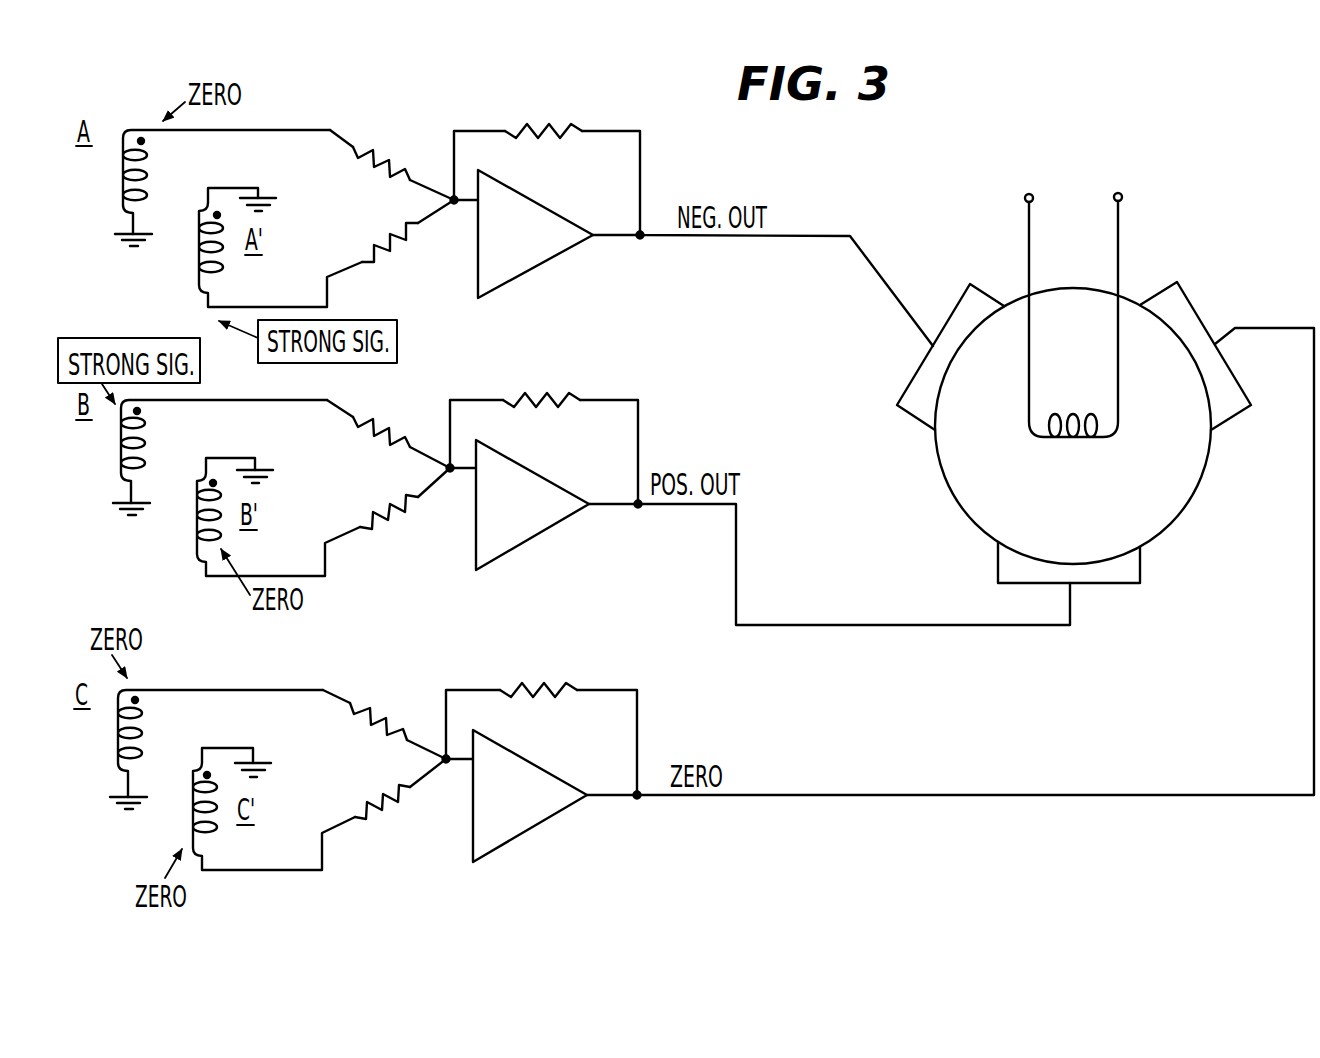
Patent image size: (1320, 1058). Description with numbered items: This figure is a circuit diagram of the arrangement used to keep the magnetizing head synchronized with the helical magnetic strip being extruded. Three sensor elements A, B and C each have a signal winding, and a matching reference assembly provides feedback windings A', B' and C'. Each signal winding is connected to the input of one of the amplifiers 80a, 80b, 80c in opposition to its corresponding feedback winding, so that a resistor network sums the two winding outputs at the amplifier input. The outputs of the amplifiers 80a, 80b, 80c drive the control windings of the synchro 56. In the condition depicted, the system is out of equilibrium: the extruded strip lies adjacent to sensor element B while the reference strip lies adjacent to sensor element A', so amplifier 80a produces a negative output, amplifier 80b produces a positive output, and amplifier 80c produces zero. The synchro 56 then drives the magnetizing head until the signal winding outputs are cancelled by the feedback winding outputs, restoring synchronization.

The amplifier 80a is at (548, 250).
The amplifier 80b is at (542, 522).
The amplifier 80c is at (540, 808).
The synchro 56 is at (951, 460).